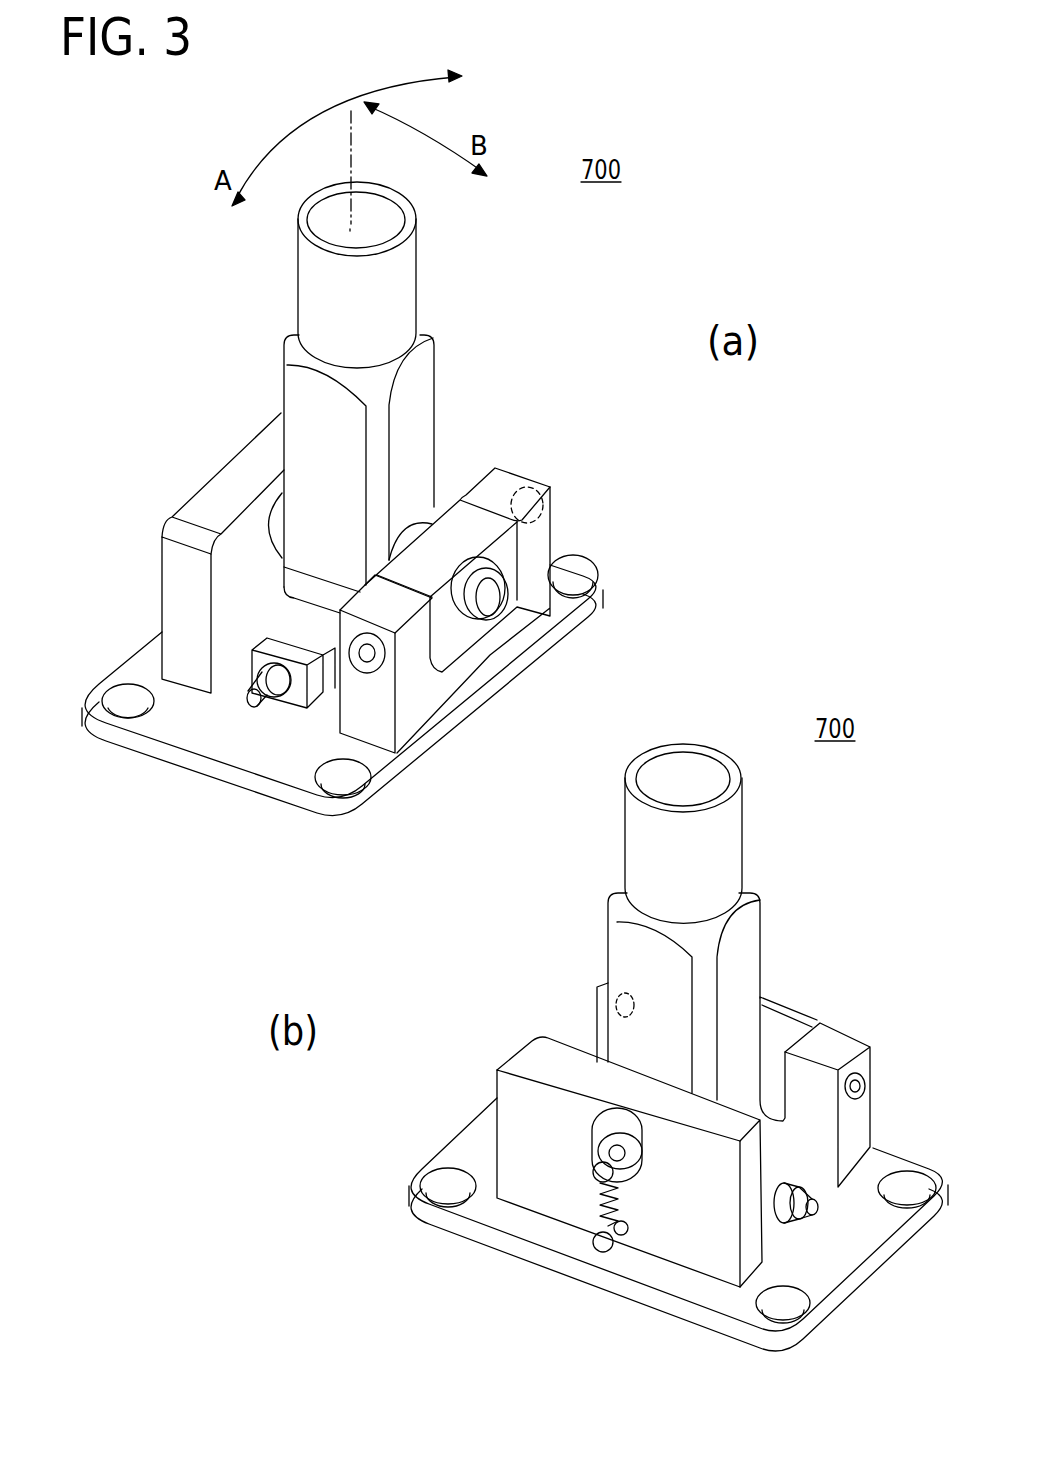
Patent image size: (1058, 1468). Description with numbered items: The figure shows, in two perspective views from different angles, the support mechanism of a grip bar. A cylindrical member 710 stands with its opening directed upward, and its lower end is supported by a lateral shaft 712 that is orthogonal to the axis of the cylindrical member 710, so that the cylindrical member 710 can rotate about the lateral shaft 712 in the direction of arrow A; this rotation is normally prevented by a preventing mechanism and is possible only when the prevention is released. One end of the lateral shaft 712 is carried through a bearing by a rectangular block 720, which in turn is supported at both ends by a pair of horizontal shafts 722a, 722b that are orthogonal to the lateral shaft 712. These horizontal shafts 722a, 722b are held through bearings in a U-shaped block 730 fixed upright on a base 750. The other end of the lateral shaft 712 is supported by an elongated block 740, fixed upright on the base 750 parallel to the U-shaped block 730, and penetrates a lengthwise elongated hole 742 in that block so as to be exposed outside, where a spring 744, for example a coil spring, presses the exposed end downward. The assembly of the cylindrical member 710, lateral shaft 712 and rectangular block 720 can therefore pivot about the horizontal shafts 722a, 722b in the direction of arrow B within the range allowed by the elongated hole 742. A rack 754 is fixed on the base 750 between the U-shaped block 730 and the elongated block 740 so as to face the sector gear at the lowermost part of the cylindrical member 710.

The cylindrical member 710 is at (401, 298).
The lateral shaft 712 is at (482, 603).
The rectangular block 720 is at (507, 563).
The horizontal shaft 722a is at (370, 657).
The horizontal shaft 722b is at (537, 477).
The U-shaped block 730 is at (450, 680).
The elongated block 740 is at (185, 566).
The elongated hole 742 is at (597, 1122).
The spring 744 is at (618, 1233).
The base 750 is at (216, 749).
The rack 754 is at (292, 630).